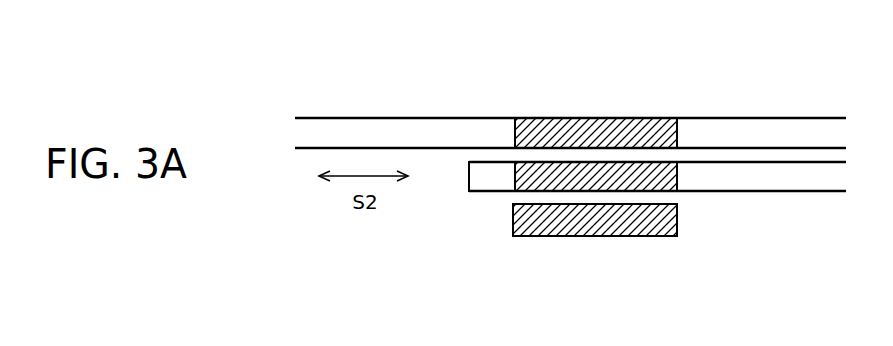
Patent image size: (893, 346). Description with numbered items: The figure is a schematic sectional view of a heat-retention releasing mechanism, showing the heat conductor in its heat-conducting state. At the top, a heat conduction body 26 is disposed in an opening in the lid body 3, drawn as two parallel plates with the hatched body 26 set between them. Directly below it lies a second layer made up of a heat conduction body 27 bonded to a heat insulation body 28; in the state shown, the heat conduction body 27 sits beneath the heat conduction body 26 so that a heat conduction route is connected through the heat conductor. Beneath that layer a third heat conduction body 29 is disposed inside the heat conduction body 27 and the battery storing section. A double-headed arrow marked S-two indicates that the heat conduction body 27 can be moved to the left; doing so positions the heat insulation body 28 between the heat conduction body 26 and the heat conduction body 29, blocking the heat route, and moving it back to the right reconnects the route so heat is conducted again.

The lid body 3 is at (411, 128).
The heat conduction body 26 is at (572, 118).
The heat conduction body 27 is at (515, 191).
The heat insulation body 28 is at (778, 182).
The heat conduction body 29 is at (597, 236).